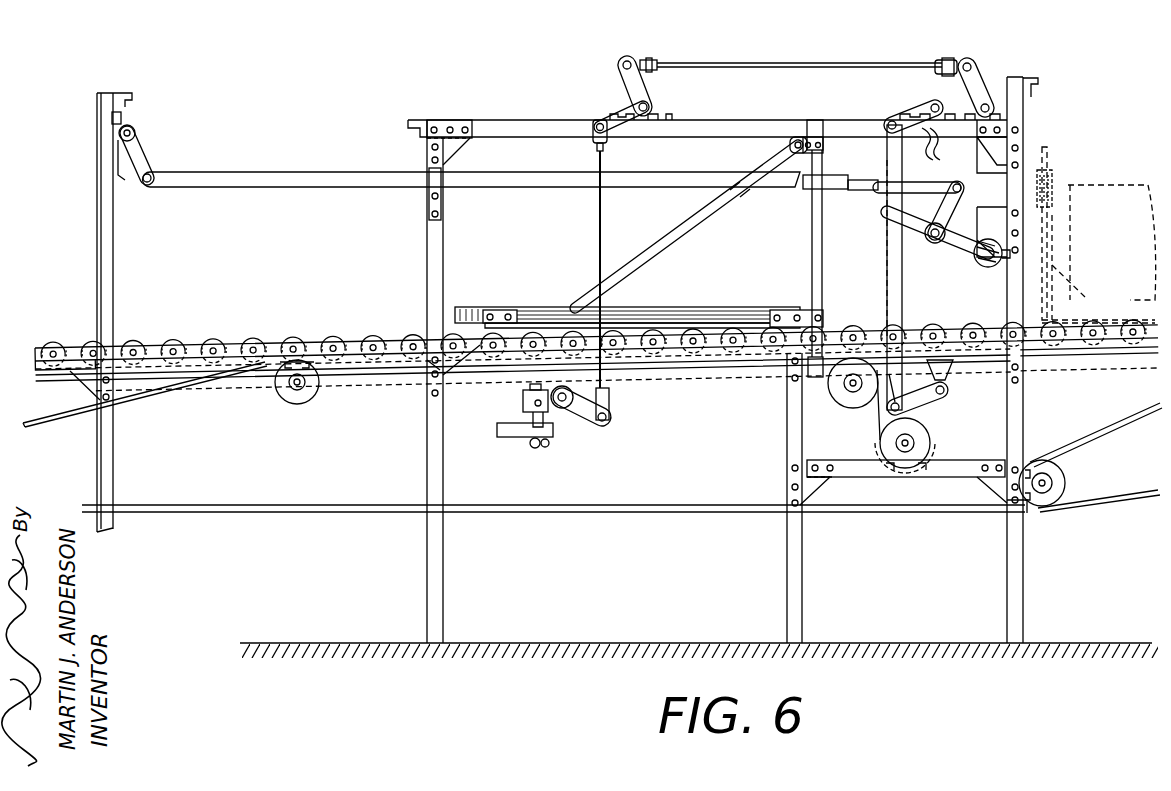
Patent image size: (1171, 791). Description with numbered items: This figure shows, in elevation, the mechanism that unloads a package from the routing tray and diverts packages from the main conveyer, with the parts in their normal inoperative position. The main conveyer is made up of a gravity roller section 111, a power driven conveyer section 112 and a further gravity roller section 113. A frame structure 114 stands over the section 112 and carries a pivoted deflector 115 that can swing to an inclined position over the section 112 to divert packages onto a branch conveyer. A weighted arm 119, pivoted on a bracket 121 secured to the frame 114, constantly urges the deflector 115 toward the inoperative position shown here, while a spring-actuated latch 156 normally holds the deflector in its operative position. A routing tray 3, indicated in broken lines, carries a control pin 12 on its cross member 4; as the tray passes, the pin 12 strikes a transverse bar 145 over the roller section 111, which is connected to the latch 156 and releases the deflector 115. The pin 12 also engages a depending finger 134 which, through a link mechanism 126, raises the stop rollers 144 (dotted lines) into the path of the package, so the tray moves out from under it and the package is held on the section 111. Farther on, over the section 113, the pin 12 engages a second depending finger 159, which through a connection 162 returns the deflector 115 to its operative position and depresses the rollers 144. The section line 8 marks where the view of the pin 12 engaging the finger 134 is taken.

The carton 3 is at (1110, 184).
The cross member 4 is at (1048, 173).
The section line 8- 8 is at (962, 157).
The control pin 12 is at (1049, 153).
The gravity roller section 111 is at (1130, 355).
The power driven conveyer section 112 is at (350, 357).
The gravity roller section 113 is at (40, 345).
The frame structure 114 is at (507, 124).
The deflector 115 is at (520, 305).
The weighted arm 119 is at (990, 268).
The bracket 121 is at (1000, 229).
The link mechanism 126 is at (890, 287).
The depending finger 134 is at (930, 152).
The stop rollers 144 is at (893, 336).
The transverse bar 145 is at (997, 164).
The spring-actuated latch 156 is at (543, 448).
The depending finger 159 is at (120, 172).
The connection 162 is at (308, 180).